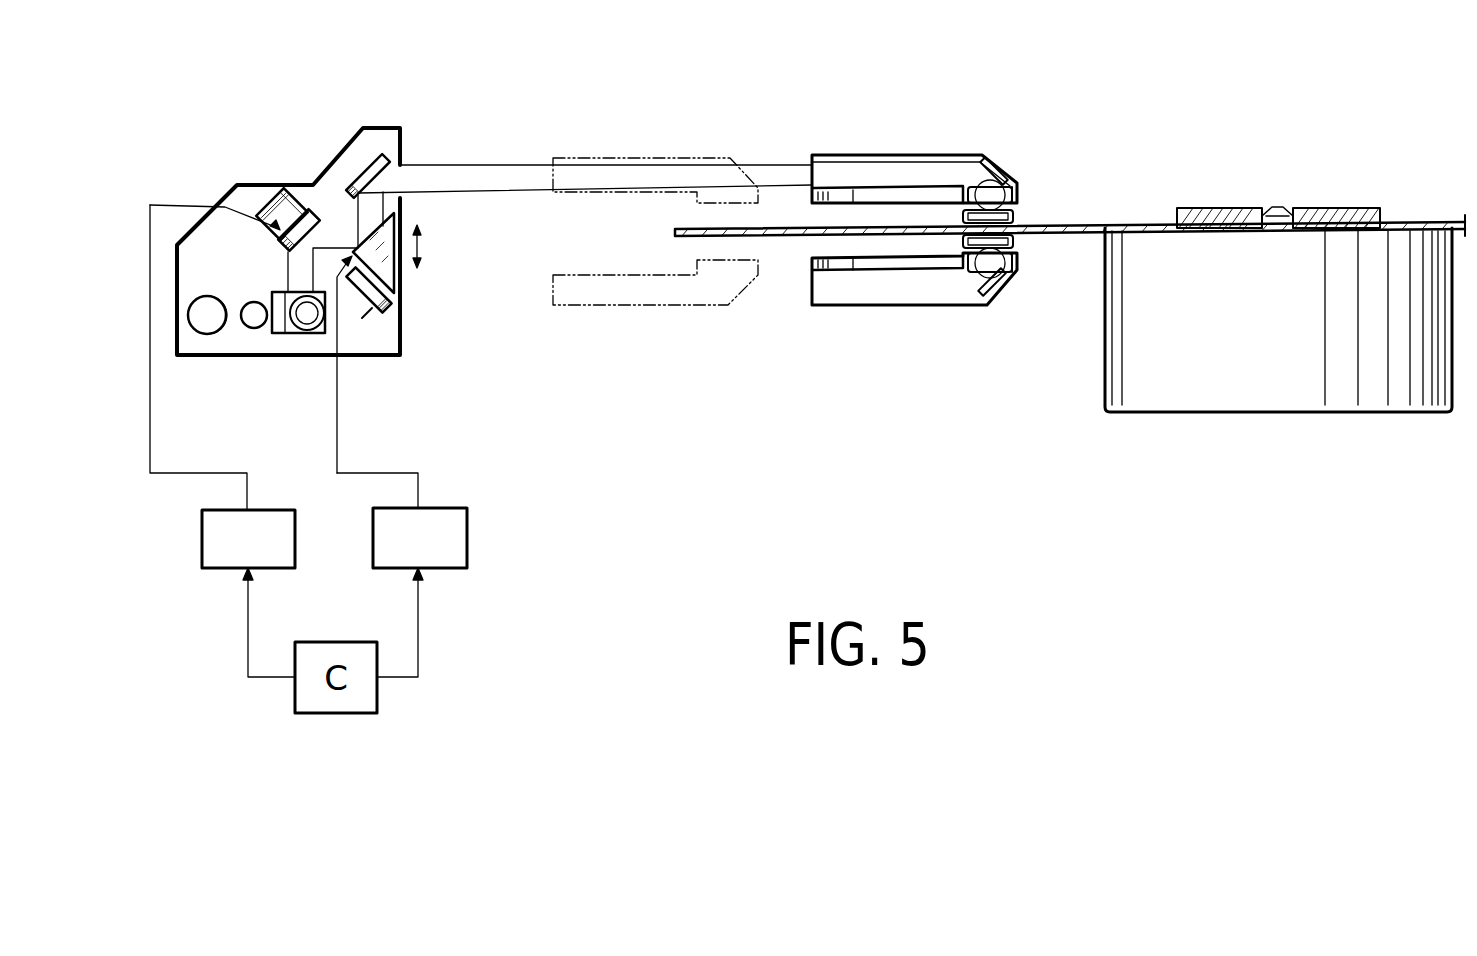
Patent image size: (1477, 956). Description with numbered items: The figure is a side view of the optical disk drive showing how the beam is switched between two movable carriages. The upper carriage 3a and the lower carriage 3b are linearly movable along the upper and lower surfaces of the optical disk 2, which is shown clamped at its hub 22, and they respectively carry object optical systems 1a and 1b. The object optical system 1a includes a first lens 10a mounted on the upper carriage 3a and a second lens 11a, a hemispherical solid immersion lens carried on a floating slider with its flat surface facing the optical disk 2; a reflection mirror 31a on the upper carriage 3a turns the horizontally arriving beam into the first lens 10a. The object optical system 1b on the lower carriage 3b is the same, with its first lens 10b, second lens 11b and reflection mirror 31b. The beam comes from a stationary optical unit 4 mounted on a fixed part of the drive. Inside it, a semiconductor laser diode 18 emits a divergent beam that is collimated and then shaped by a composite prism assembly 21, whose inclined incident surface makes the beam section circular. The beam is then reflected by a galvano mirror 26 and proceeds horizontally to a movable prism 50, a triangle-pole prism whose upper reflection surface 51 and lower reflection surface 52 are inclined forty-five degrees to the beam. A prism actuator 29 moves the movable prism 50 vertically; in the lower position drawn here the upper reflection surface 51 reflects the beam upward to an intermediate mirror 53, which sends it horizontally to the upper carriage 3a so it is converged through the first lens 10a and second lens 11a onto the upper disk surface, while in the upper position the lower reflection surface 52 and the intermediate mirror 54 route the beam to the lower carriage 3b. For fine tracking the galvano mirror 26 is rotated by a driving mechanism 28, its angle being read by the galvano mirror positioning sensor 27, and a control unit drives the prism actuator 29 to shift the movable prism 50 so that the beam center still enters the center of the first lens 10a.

The object optical system 1a is at (1072, 137).
The object optical system 1b is at (1082, 317).
The optical disk 2 is at (1160, 223).
The upper carriage 3a is at (942, 124).
The lower carriage 3b is at (943, 326).
The stationary optical unit 4 is at (270, 373).
The first lens 10a is at (1017, 185).
The first lens 10b is at (1010, 272).
The second lens 11a is at (1020, 213).
The second lens 11b is at (1023, 253).
The semiconductor laser diode 18 is at (307, 320).
The composite prism assembly 21 is at (272, 333).
The disk hub / clamp 22 is at (1230, 210).
The galvano mirror 26 is at (277, 243).
The galvano mirror positioning sensor 27 is at (277, 207).
The driving mechanism 28 is at (202, 543).
The prism actuator 29 is at (467, 540).
The reflection mirror 31a is at (990, 160).
The reflection mirror 31b is at (968, 293).
The movable prism 50 is at (385, 268).
The upper reflection surface 51 is at (400, 202).
The lower reflection surface 52 is at (393, 273).
The intermediate mirror 53 is at (363, 163).
The intermediate mirror 54 is at (372, 312).